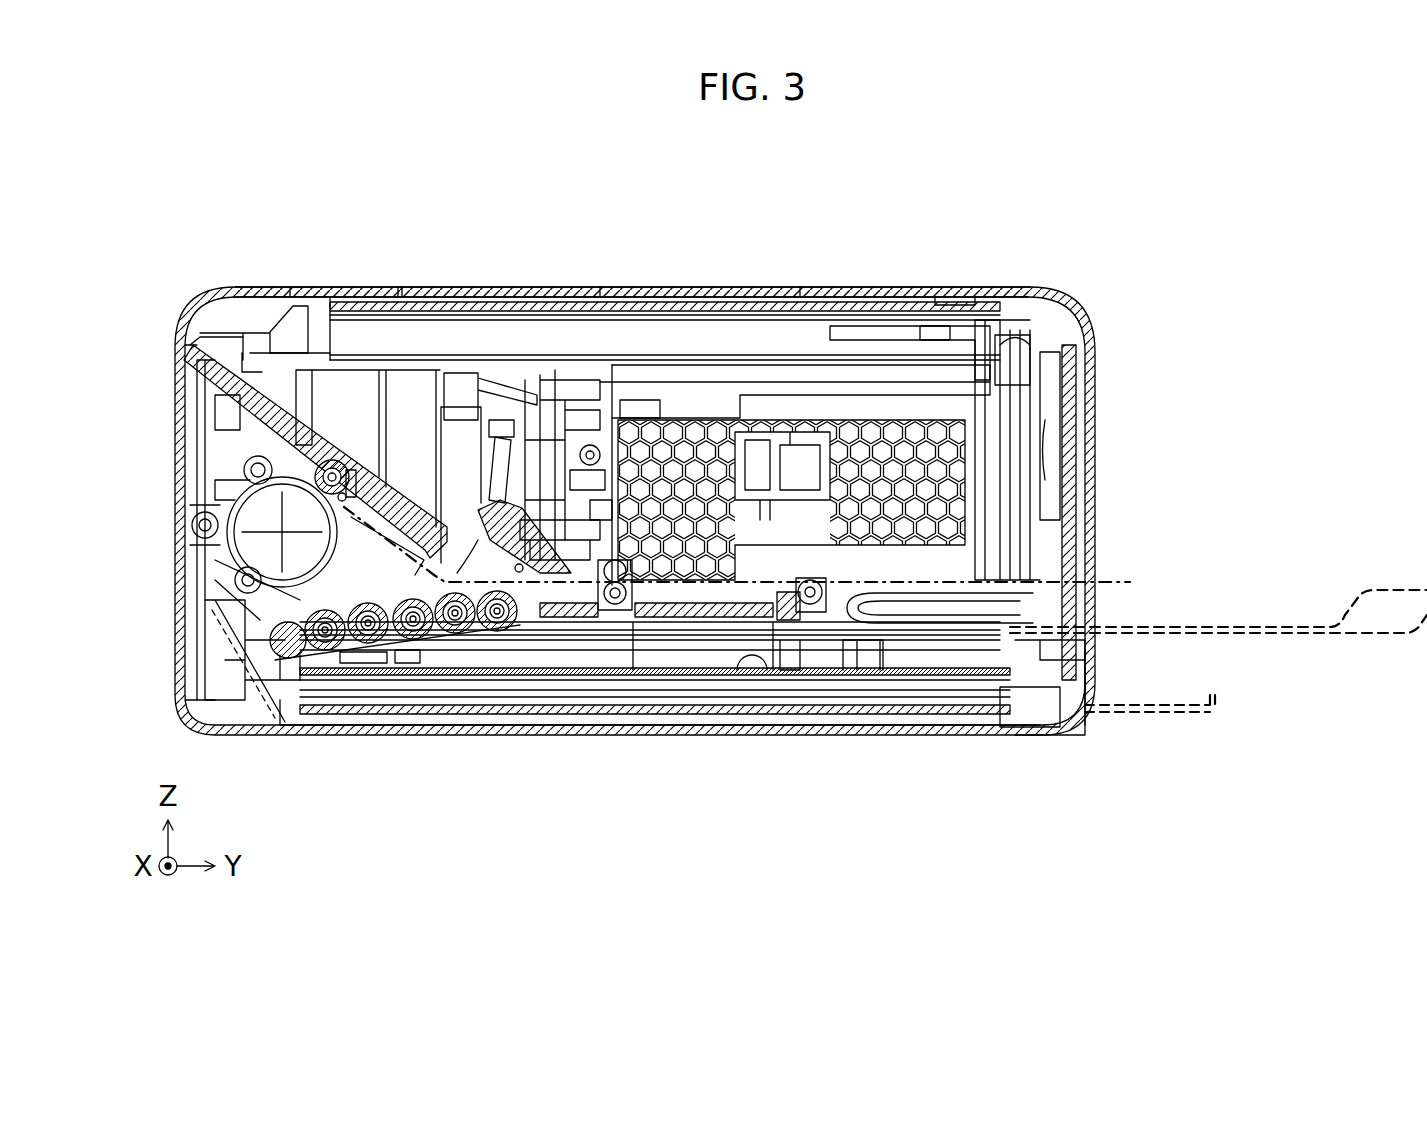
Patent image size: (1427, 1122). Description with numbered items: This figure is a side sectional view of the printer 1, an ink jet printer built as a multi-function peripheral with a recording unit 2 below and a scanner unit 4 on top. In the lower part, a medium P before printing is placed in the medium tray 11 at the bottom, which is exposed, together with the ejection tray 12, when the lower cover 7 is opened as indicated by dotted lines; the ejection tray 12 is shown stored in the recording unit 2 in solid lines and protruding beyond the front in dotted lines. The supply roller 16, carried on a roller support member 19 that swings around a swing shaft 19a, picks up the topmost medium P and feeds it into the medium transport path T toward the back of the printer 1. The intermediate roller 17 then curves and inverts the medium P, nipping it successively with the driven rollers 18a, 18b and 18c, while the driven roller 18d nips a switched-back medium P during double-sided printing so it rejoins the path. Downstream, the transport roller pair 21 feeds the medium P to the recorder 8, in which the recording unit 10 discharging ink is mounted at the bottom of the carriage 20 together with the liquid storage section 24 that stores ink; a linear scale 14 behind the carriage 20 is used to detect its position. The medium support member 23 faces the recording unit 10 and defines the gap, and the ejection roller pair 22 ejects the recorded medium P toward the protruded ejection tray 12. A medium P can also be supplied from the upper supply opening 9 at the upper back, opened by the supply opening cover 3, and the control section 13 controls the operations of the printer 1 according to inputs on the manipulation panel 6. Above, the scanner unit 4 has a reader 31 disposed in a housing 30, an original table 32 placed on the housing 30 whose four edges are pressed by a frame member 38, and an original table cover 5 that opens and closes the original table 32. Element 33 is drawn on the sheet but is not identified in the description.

The printer 1 is at (1010, 220).
The recording unit 2 is at (174, 372).
The supply opening cover 3 is at (212, 296).
The scanner unit 4 is at (466, 274).
The original table cover 5 is at (893, 300).
The manipulation panel 6 is at (1097, 380).
The lower cover 7 is at (1098, 665).
The recorder 8 is at (697, 196).
The upper supply opening 9 is at (258, 316).
The recording unit 10 is at (662, 503).
The medium tray 11 is at (1025, 700).
The ejection tray 12 is at (858, 632).
The control section 13 is at (178, 668).
The linear scale 14 is at (538, 300).
The supply roller 16 is at (308, 710).
The intermediate roller 17 is at (200, 500).
The driven roller 18a is at (186, 522).
The driven roller 18b is at (245, 465).
The driven roller 18c is at (336, 460).
The driven roller 18d is at (195, 598).
The roller support member 19 is at (432, 648).
The swing shaft 19a is at (516, 640).
The carriage 20 is at (683, 483).
The transport roller pair 21 is at (615, 612).
The ejection roller pair 22 is at (814, 618).
The medium support member 23 is at (682, 620).
The liquid storage section 24 is at (715, 390).
The housing 30 is at (1022, 300).
The reader 31 is at (760, 333).
The original table 32 is at (833, 300).
The support member 33 is at (920, 306).
The frame member 38 is at (1062, 302).
The medium P is at (748, 668).
The medium transport path T is at (1130, 580).